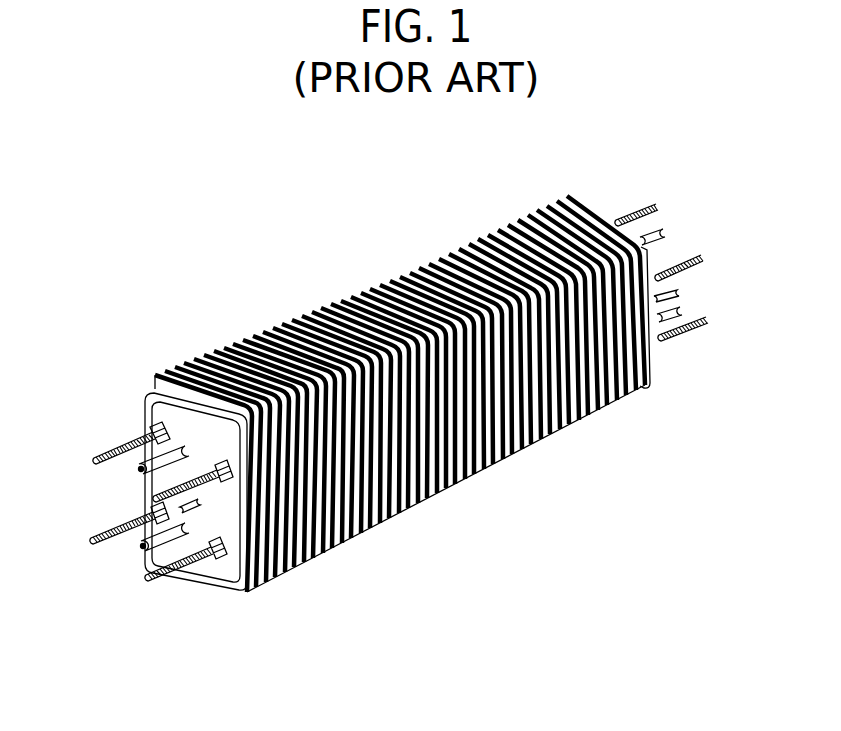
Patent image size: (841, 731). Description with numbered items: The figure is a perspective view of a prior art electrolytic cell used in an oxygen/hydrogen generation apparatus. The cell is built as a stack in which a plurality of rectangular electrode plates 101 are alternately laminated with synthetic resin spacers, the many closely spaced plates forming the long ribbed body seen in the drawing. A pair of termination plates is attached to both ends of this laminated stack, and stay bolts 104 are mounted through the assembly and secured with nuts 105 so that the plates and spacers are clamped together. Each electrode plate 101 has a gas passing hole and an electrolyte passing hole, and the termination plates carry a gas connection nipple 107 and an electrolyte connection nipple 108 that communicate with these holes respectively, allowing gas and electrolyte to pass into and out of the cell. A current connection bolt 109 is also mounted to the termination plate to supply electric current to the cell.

The electrode plate 101 is at (378, 290).
The stay bolt 104 is at (690, 332).
The nut 105 is at (219, 559).
The gas connection nipple 107 is at (663, 238).
The electrolyte connection nipple 108 is at (677, 312).
The current connection bolt 109 is at (192, 510).